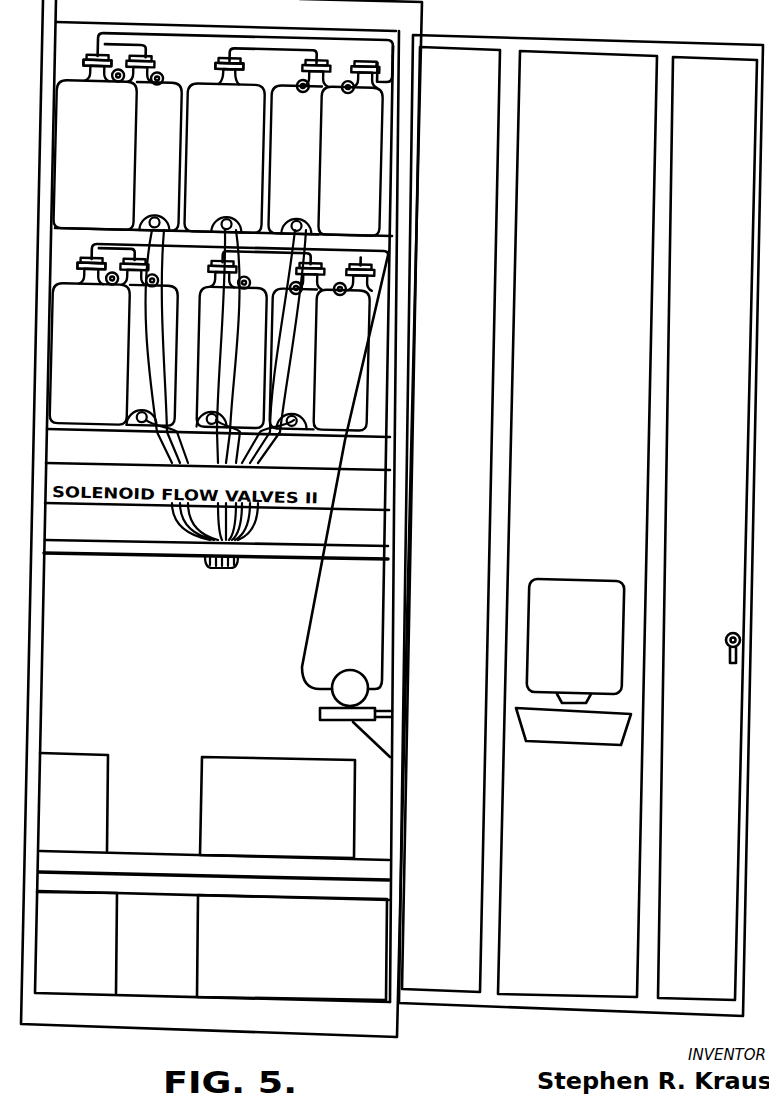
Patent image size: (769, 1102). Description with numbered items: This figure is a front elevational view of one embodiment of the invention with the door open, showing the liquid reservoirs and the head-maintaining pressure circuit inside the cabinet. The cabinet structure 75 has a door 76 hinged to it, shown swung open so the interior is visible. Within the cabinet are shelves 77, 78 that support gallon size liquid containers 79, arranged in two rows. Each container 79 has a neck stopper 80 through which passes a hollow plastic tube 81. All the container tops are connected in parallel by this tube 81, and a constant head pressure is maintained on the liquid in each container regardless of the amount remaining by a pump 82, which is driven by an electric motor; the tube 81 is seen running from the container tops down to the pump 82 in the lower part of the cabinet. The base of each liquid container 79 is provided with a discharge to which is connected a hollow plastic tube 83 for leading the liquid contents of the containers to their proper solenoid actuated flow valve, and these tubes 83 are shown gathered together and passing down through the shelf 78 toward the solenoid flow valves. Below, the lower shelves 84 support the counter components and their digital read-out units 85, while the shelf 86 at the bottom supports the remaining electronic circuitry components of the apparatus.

The cabinet structure 75 is at (34, 473).
The door 76 is at (586, 493).
The shelf 77 is at (55, 229).
The shelf 78 is at (52, 438).
The liquid container 79 is at (350, 374).
The neck stopper 80 is at (97, 56).
The hollow plastic tube 81 is at (167, 38).
The pump 82 is at (369, 667).
The hollow plastic tube 83 is at (140, 214).
The lower shelf 84 is at (133, 861).
The digital read-out unit 85 is at (86, 757).
The shelf 86 is at (127, 1003).